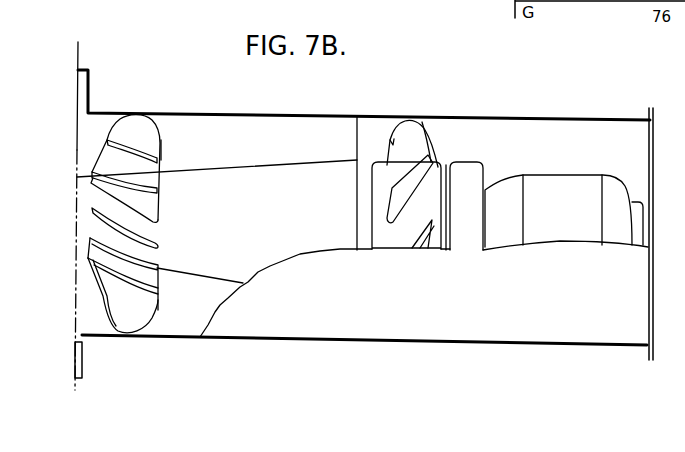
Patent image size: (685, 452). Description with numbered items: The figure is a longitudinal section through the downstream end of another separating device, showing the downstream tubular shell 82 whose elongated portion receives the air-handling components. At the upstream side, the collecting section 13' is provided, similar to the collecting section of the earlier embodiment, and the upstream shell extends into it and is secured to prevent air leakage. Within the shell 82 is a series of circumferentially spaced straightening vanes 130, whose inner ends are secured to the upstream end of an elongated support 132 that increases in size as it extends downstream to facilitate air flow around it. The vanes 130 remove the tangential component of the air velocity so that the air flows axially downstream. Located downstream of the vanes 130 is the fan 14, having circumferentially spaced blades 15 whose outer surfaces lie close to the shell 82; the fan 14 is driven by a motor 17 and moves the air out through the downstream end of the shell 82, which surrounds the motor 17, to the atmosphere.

The downstream tubular shell 82 is at (267, 123).
The collecting section 13' is at (103, 360).
The straightening vanes 130 is at (157, 150).
The elongated support 132 is at (283, 172).
The fan blades 15 is at (422, 143).
The fan 14 is at (483, 172).
The motor 17 is at (565, 188).